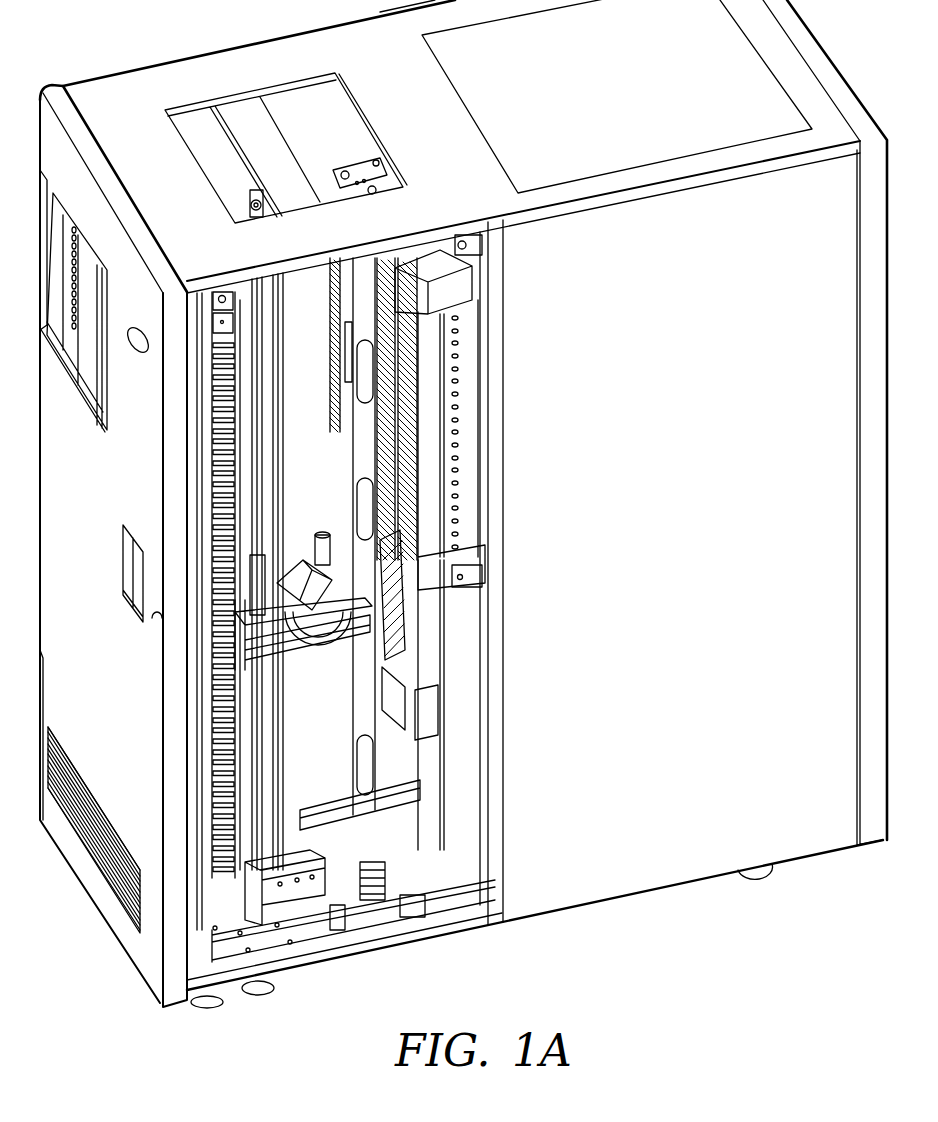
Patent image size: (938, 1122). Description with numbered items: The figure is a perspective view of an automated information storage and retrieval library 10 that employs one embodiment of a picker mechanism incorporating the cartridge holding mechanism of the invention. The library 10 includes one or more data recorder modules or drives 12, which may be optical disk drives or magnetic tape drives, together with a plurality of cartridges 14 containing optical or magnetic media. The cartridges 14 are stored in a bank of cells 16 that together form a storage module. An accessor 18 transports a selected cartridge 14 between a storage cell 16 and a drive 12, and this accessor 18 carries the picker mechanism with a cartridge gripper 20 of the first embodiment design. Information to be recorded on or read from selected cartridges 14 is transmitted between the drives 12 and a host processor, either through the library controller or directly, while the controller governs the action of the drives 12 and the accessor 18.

The automated information storage and retrieval library 10 is at (238, 62).
The drive 12 is at (428, 628).
The cartridge 14 is at (212, 418).
The storage cell 16 is at (375, 443).
The accessor 18 is at (242, 893).
The cartridge gripper 20 is at (358, 638).